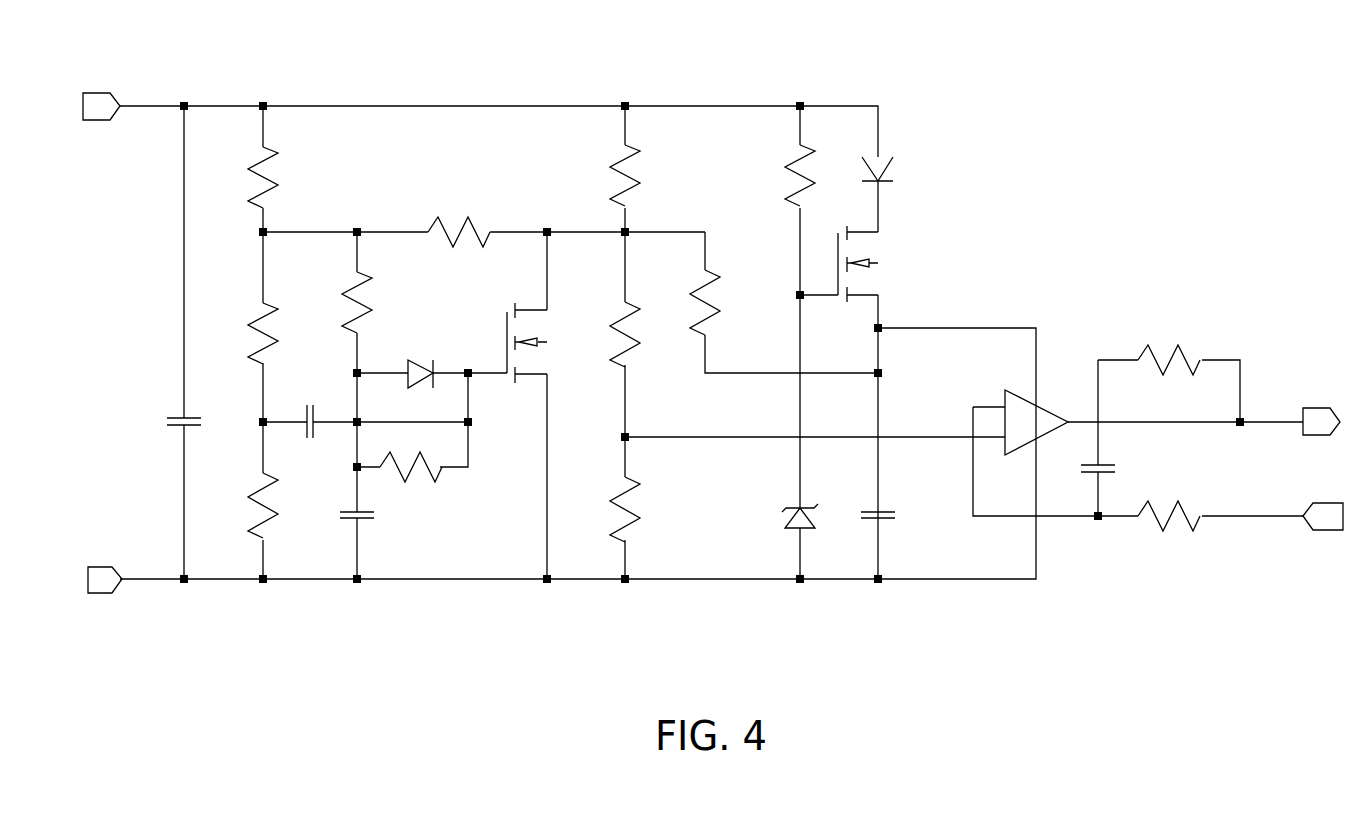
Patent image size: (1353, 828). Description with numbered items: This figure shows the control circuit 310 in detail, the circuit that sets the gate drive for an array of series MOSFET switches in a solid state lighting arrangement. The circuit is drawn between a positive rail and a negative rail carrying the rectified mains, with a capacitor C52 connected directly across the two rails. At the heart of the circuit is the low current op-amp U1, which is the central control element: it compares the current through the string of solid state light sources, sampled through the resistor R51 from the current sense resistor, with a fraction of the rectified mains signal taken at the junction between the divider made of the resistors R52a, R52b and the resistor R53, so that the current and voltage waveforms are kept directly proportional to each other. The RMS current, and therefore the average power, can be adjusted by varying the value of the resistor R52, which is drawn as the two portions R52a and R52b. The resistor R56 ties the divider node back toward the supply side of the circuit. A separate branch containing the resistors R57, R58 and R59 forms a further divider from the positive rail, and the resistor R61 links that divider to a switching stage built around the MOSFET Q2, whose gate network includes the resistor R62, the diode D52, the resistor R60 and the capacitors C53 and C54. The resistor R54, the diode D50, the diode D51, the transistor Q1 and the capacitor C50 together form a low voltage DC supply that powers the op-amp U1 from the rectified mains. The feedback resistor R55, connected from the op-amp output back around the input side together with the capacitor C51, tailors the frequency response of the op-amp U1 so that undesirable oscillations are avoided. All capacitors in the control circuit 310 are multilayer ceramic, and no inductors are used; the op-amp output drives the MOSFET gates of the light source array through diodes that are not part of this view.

The control circuit 310 is at (731, 35).
The capacitor C52 is at (190, 422).
The resistor R57 is at (298, 178).
The resistor R58 is at (239, 328).
The resistor R59 is at (286, 511).
The resistor R61 is at (465, 235).
The resistor R62 is at (366, 298).
The capacitor C53 is at (318, 415).
The capacitor C54 is at (378, 528).
The diode D52 is at (421, 370).
The resistor R60 is at (447, 467).
The MOSFET Q2 is at (532, 356).
The resistor R53 is at (589, 170).
The resistor R52a is at (646, 342).
The resistor R52b is at (652, 509).
The resistor R56 is at (736, 309).
The resistor R54 is at (771, 170).
The zener diode D50 is at (756, 513).
The diode D51 is at (912, 168).
The MOSFET Q1 is at (903, 264).
The capacitor C50 is at (891, 519).
The low current op-amp U1 is at (1003, 407).
The resistor R55 is at (1169, 357).
The capacitor C51 is at (1097, 470).
The resistor R51 is at (1155, 515).